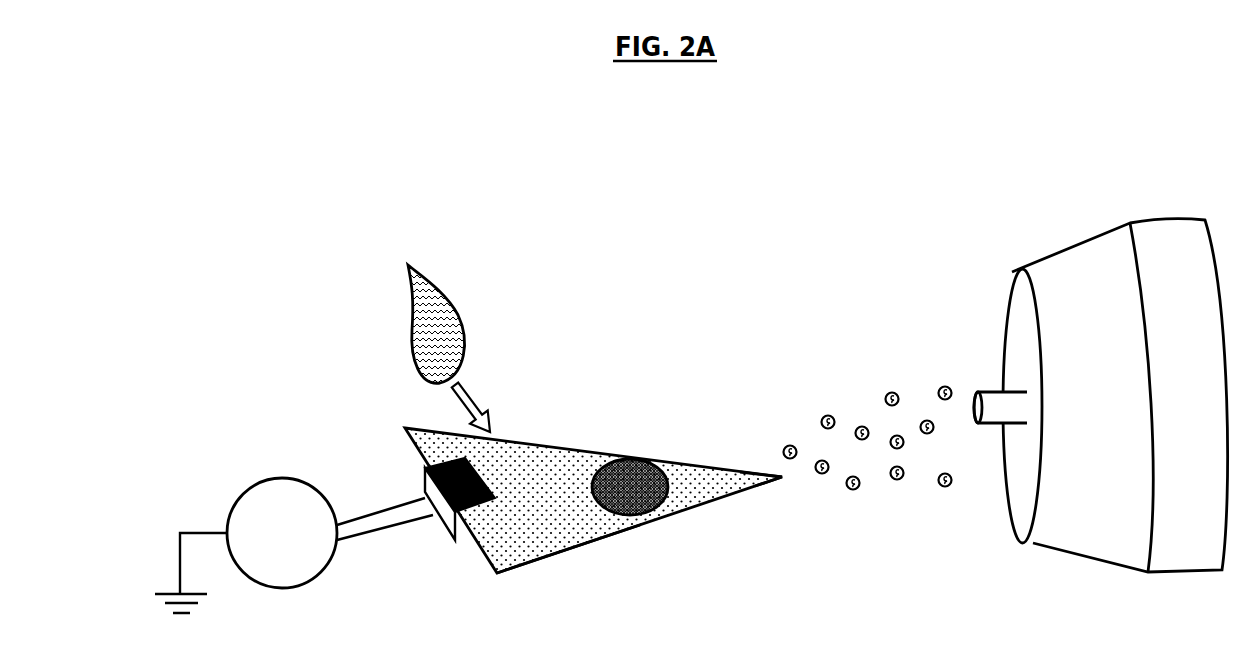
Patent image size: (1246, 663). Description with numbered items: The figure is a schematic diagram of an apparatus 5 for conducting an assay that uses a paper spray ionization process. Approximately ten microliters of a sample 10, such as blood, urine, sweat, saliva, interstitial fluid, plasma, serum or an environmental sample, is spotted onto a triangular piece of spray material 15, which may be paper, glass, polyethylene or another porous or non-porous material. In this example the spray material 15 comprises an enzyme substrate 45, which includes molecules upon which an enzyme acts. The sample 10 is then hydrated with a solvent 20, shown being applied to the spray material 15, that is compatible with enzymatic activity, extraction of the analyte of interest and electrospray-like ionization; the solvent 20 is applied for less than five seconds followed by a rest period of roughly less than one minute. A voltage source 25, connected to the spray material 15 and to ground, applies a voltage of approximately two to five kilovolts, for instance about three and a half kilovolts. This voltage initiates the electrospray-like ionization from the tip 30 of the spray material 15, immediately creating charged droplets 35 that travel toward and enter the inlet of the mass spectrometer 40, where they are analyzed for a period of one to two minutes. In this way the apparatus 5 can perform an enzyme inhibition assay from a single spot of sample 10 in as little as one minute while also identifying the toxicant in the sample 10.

The apparatus 5 is at (103, 249).
The sample 10 is at (647, 460).
The spray material 15 is at (597, 542).
The solvent 20 is at (438, 286).
The voltage source 25 is at (310, 583).
The tip 30 is at (781, 479).
The charged droplets 35 is at (873, 382).
The mass spectrometer 40 is at (1050, 545).
The enzyme substrate 45 is at (528, 555).